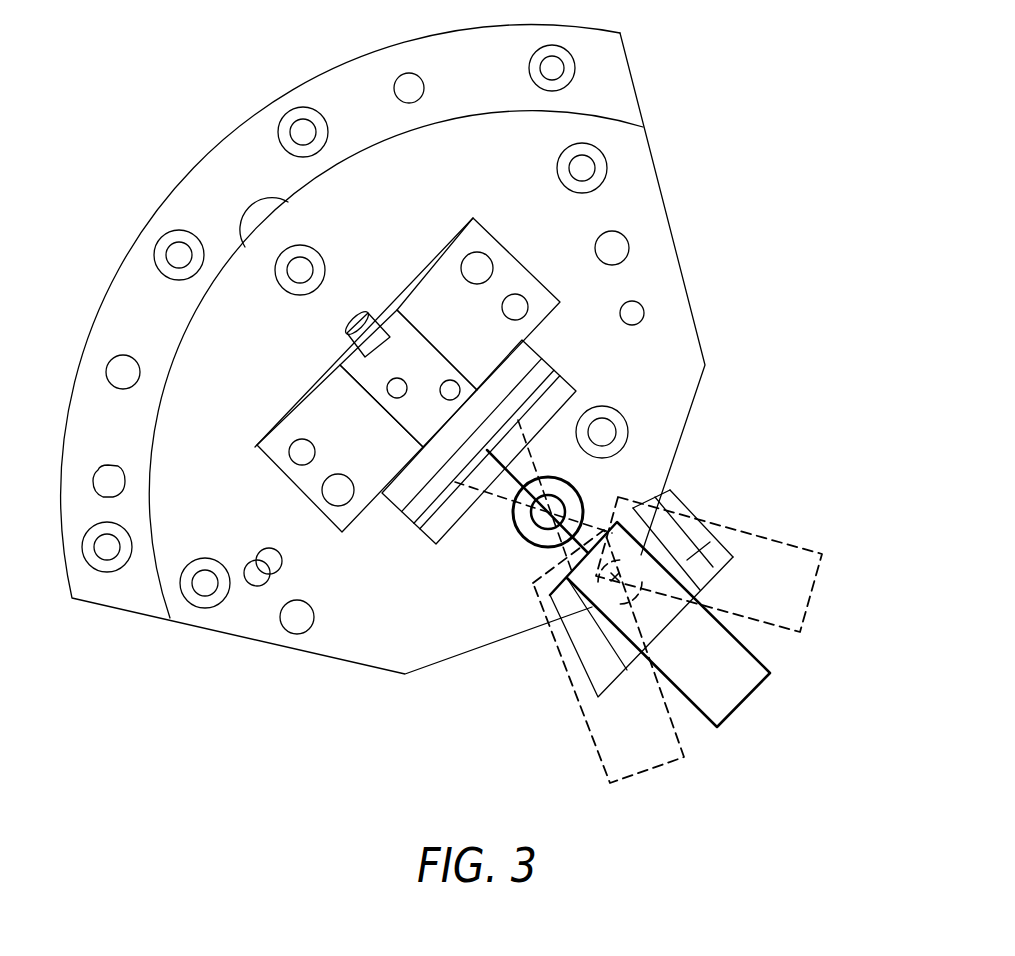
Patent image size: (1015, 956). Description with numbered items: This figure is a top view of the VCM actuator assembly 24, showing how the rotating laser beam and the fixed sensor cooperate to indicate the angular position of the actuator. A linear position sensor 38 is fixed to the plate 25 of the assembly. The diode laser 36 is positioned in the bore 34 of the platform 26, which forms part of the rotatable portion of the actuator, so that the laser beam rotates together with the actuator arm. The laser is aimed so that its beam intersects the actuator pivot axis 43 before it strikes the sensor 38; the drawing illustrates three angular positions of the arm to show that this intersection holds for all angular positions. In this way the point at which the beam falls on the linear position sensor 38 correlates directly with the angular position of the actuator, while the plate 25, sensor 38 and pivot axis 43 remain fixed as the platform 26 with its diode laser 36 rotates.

The actuator assembly 24 is at (756, 128).
The plate 25 is at (663, 287).
The platform 26 is at (722, 570).
The bore 34 is at (616, 622).
The diode laser 36 is at (727, 697).
The linear position sensor 38 is at (545, 372).
The pivot axis 43 is at (513, 520).